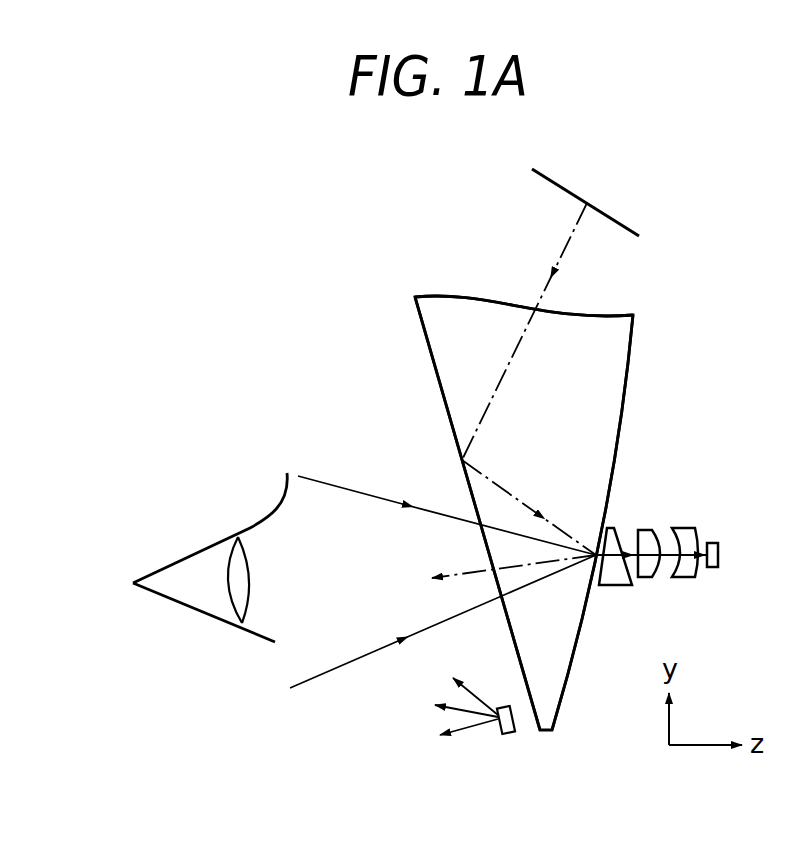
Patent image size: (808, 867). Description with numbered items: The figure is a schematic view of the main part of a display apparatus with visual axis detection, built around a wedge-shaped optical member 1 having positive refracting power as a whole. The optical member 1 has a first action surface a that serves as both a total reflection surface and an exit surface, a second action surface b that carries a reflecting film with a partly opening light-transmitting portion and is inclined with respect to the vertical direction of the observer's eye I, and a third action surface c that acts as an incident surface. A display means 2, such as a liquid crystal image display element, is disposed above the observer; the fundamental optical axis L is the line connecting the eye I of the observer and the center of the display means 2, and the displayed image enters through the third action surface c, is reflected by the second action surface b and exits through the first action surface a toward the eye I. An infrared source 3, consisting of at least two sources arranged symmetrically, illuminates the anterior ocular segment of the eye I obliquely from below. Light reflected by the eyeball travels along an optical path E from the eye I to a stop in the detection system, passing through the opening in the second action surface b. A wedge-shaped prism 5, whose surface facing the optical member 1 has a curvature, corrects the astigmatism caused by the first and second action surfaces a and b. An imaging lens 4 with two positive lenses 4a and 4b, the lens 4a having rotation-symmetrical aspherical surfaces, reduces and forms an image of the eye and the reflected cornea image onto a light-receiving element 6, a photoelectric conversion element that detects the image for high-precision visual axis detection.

The optical member 1 is at (447, 308).
The first action surface a is at (433, 368).
The second action surface b is at (627, 410).
The third action surface c is at (598, 313).
The display means 2 is at (553, 182).
The infrared source 3 is at (502, 733).
The imaging lens 4 is at (667, 507).
The positive lens 4a is at (650, 530).
The positive lens 4b is at (692, 532).
The wedge-shaped prism 5 is at (617, 585).
The light-receiving element 6 is at (718, 545).
The fundamental optical axis L is at (503, 372).
The optical path E is at (355, 490).
The eye I is at (213, 618).